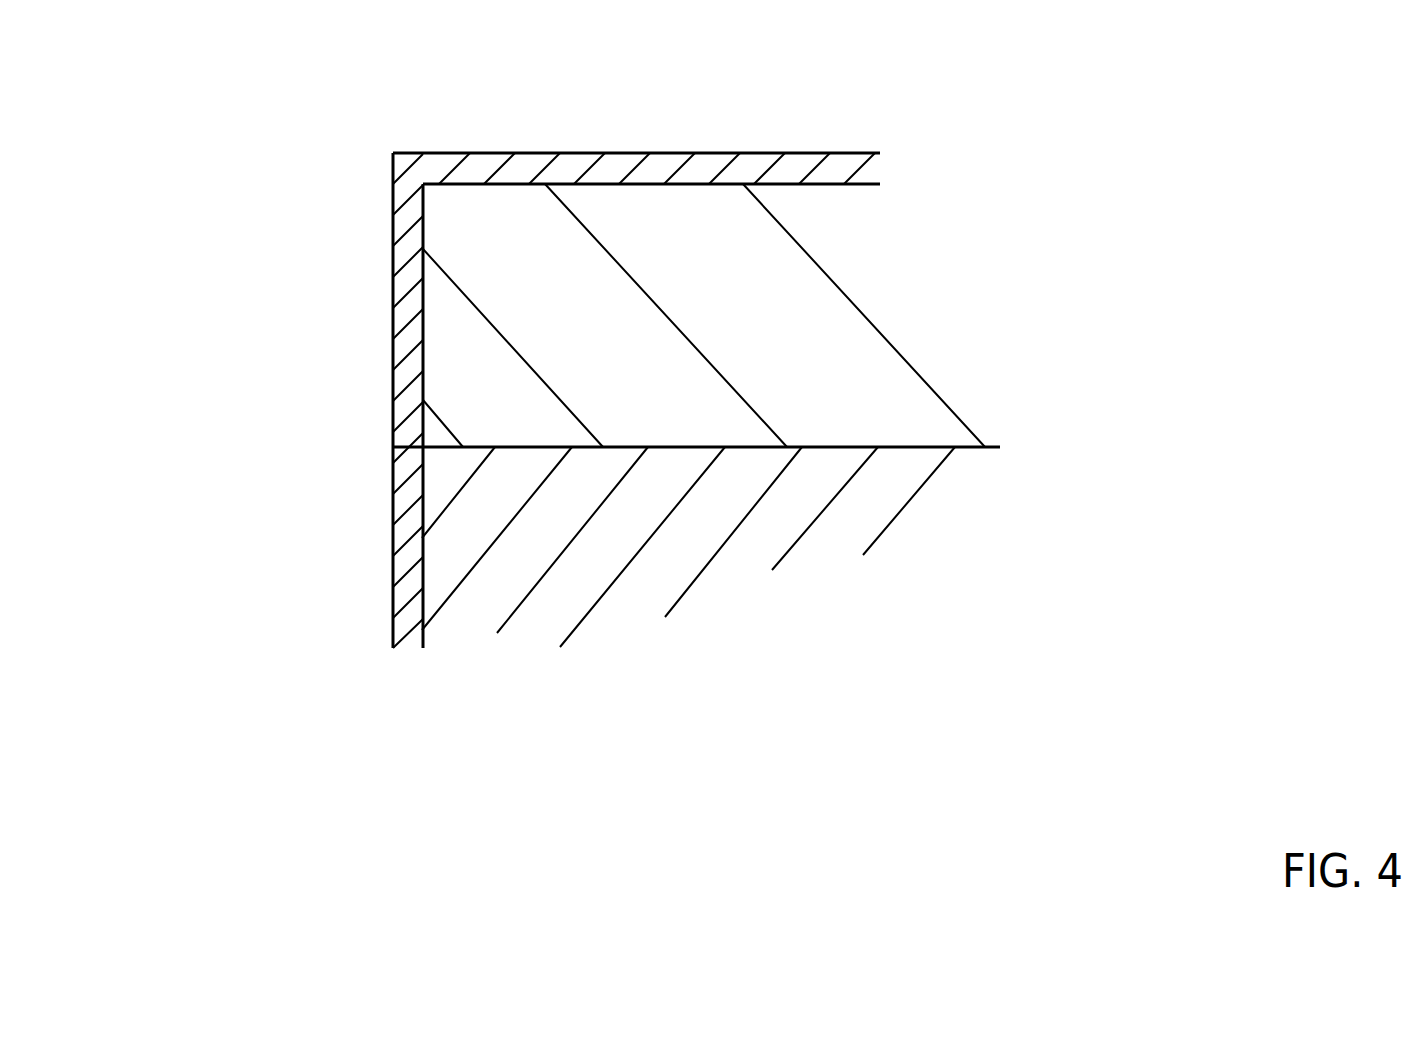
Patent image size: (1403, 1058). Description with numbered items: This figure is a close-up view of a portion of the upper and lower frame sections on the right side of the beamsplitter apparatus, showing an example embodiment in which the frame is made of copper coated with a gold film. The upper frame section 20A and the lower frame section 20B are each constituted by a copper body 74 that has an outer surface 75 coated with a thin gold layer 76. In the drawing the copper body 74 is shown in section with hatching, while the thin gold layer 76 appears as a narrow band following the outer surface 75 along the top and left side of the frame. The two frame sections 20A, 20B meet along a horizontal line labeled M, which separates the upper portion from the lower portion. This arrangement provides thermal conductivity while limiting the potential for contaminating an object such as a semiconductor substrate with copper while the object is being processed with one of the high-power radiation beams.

The copper body 74 is at (789, 331).
The outer surface 75 is at (422, 218).
The thin gold layer 76 is at (713, 150).
The upper frame section 20A is at (312, 272).
The lower frame section 20B is at (265, 574).
The mating plane M is at (363, 447).